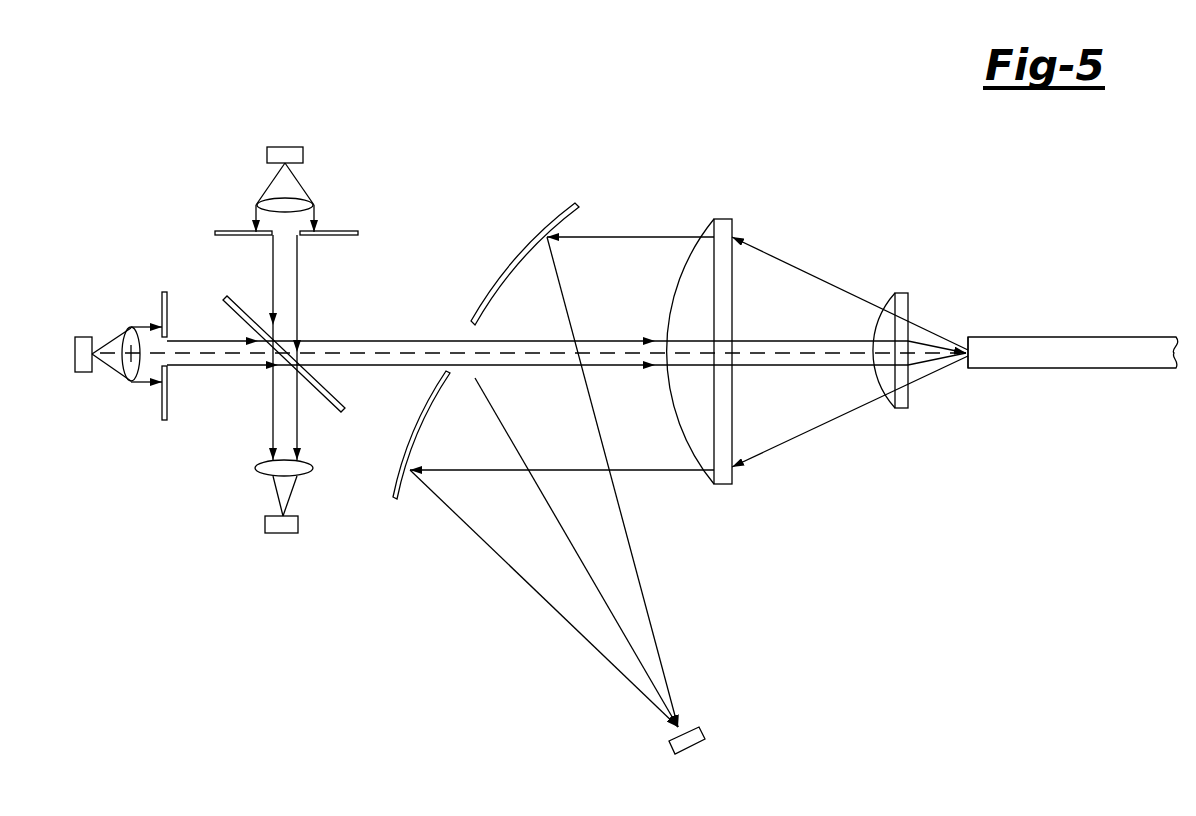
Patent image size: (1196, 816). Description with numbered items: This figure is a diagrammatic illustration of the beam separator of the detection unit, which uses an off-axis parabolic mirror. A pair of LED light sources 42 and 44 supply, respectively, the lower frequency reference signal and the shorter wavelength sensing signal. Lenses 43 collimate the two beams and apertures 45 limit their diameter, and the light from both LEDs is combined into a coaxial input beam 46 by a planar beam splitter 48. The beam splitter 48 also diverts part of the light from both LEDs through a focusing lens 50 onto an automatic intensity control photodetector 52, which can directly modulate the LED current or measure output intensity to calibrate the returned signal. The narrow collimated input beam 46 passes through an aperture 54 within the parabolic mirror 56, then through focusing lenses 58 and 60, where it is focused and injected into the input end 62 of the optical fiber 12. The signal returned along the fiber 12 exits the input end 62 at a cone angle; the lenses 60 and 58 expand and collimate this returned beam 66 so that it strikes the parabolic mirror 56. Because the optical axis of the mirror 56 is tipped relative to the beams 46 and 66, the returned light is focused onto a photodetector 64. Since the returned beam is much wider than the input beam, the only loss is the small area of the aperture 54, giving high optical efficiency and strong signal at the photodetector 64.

The optical fiber 12 is at (1030, 337).
The LED light source 42 is at (303, 151).
The lens 43 is at (318, 204).
The LED light source 44 is at (84, 372).
The aperture 45 is at (340, 233).
The coaxial input beam 46 is at (371, 341).
The planar beam splitter 48 is at (343, 410).
The focusing lens 50 is at (313, 468).
The automatic intensity control photodetector 52 is at (298, 520).
The aperture 54 is at (470, 322).
The parabolic mirror 56 is at (570, 210).
The focusing lens 58 is at (732, 222).
The focusing lens 60 is at (908, 297).
The input end 62 is at (968, 366).
The photodetector 64 is at (700, 730).
The returned beam 66 is at (650, 237).